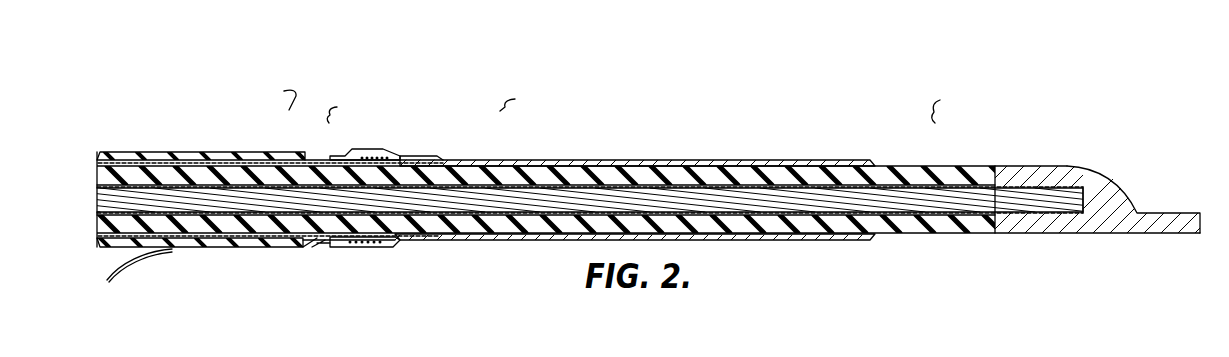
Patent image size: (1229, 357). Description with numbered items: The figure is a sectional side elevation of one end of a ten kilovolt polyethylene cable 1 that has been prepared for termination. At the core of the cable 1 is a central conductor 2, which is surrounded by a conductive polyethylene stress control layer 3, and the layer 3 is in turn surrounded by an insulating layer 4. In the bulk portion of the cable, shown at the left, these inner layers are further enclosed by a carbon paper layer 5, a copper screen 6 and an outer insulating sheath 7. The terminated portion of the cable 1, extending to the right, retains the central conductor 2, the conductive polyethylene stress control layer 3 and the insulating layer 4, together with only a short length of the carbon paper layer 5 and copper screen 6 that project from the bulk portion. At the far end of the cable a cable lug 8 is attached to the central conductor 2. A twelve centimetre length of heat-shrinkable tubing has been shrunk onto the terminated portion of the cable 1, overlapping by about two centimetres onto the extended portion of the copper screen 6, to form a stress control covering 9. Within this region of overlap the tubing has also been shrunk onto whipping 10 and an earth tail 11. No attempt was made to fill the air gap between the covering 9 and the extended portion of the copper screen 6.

The polyethylene cable 1 is at (189, 144).
The central conductor 2 is at (738, 200).
The conductive polyethylene stress control layer 3 is at (967, 187).
The insulating layer 4 is at (263, 227).
The carbon paper layer 5 is at (322, 155).
The copper screen 6 is at (275, 152).
The outer insulating sheath 7 is at (223, 152).
The cable lug 8 is at (1103, 213).
The stress control covering 9 is at (510, 163).
The whipping 10 is at (372, 243).
The earth tail 11 is at (297, 248).